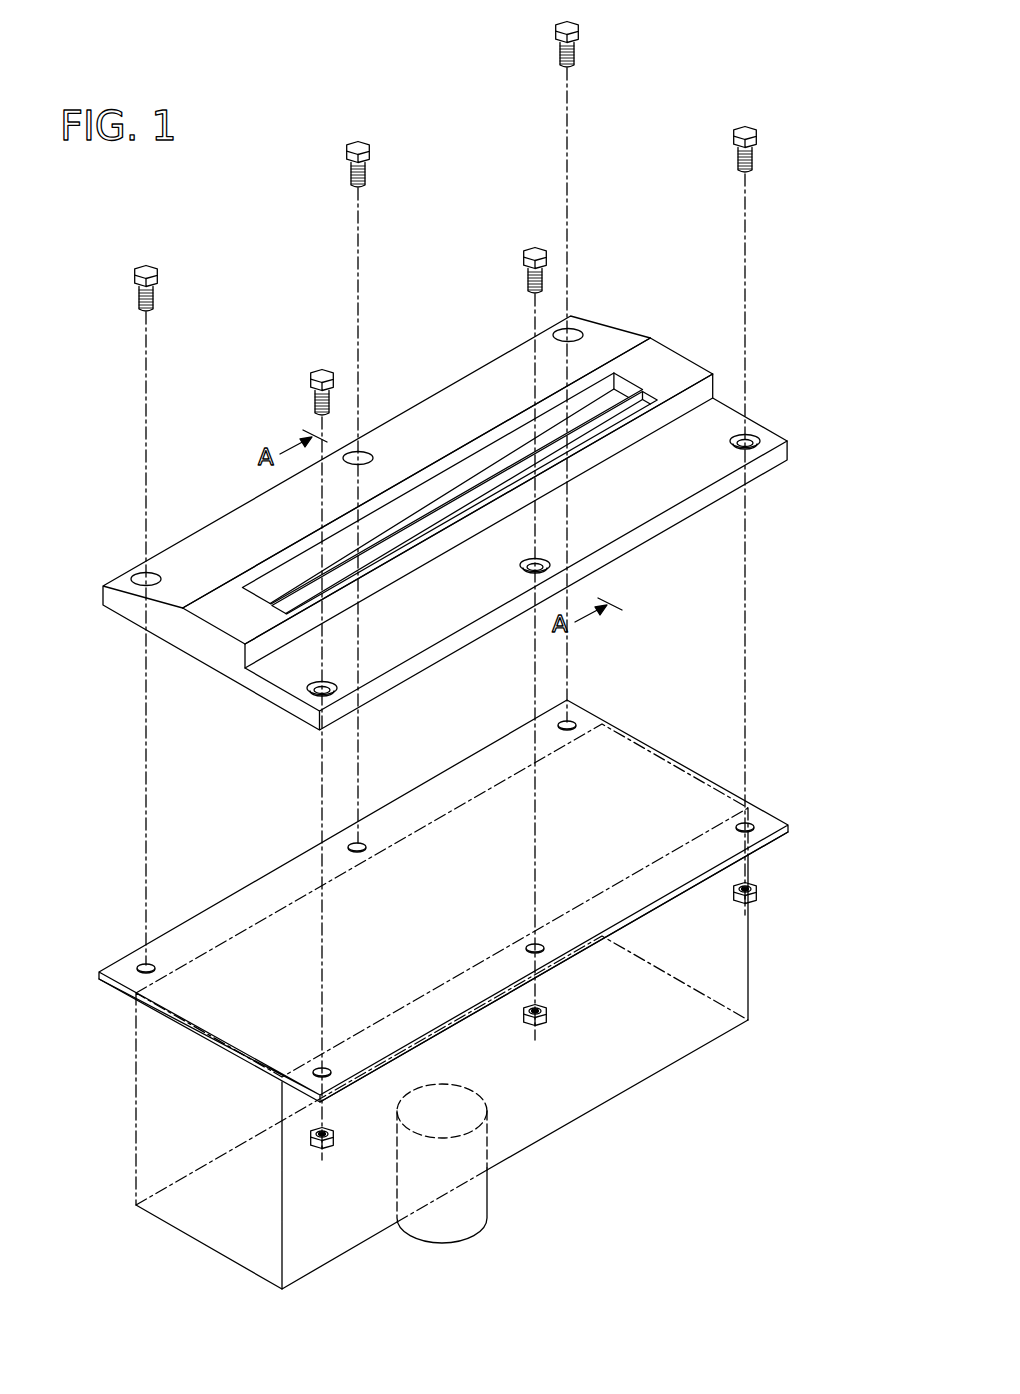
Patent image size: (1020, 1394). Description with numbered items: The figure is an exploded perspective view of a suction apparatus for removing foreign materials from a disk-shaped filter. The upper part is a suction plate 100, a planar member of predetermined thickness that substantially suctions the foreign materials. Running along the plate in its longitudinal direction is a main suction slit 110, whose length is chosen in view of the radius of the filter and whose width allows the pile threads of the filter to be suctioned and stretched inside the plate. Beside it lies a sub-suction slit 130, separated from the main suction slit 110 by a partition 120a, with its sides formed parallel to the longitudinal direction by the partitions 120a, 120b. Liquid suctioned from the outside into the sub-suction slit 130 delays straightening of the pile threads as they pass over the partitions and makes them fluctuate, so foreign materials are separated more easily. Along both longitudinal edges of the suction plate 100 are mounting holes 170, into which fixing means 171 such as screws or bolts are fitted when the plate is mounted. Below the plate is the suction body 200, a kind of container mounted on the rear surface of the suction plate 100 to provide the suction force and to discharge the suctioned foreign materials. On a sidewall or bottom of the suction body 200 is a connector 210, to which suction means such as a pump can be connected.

The suction plate 100 is at (697, 483).
The main suction slit 110 is at (507, 450).
The partition 120a is at (448, 498).
The partition 120b is at (568, 452).
The sub-suction slit 130 is at (628, 395).
The mounting holes 170 is at (141, 576).
The fixing means 171 is at (138, 296).
The suction body 200 is at (660, 1053).
The connector 210 is at (487, 1200).